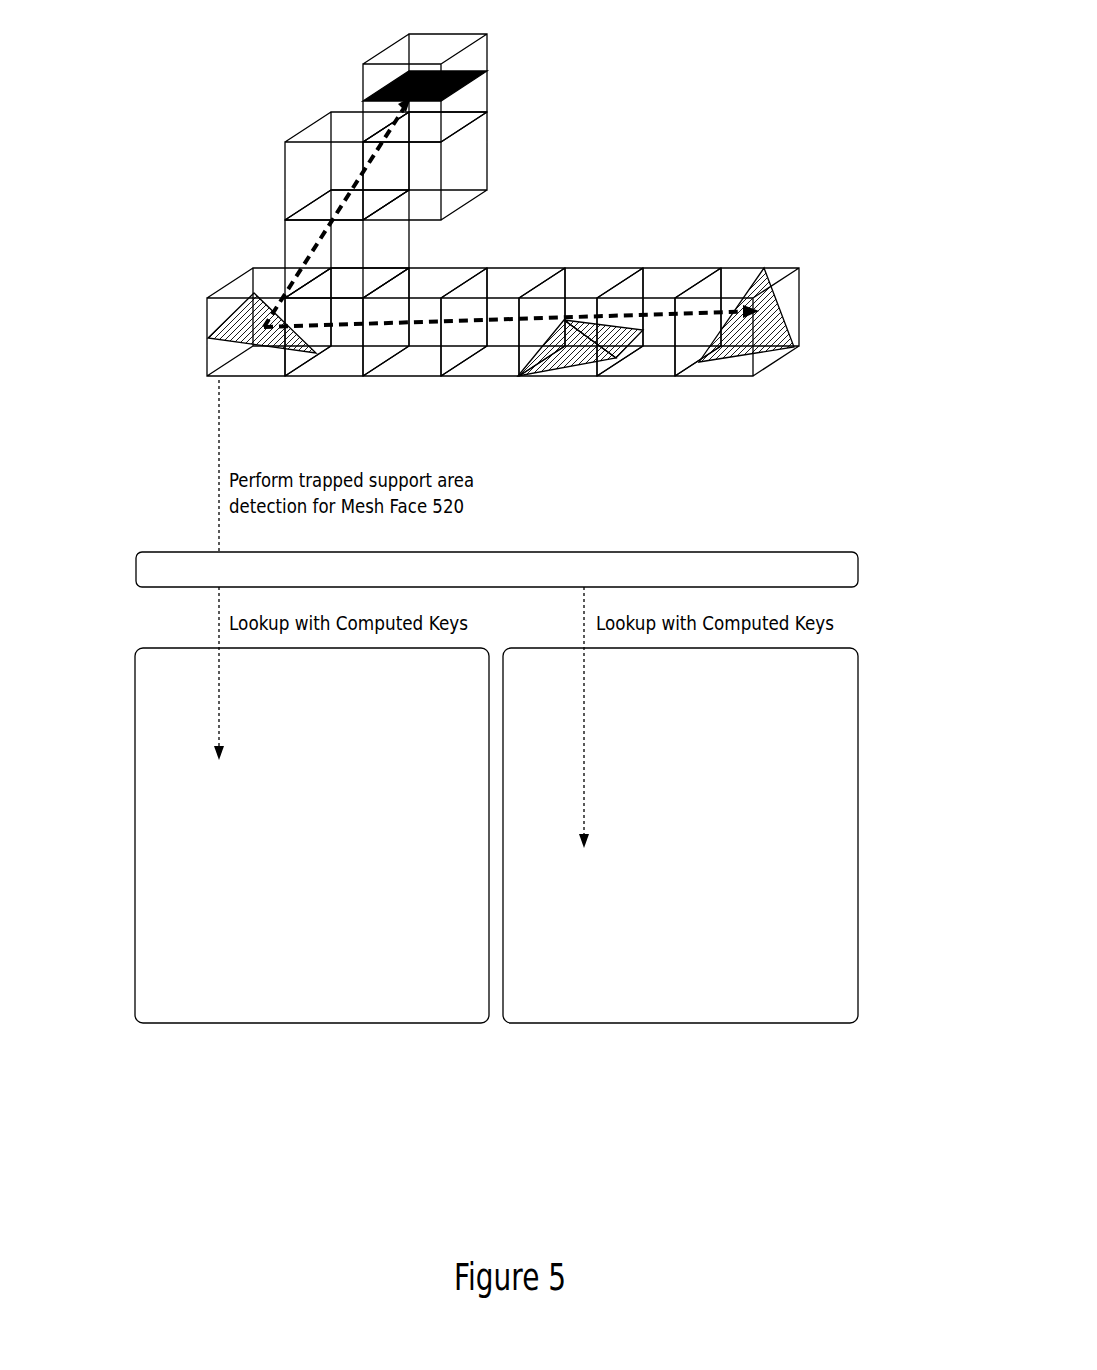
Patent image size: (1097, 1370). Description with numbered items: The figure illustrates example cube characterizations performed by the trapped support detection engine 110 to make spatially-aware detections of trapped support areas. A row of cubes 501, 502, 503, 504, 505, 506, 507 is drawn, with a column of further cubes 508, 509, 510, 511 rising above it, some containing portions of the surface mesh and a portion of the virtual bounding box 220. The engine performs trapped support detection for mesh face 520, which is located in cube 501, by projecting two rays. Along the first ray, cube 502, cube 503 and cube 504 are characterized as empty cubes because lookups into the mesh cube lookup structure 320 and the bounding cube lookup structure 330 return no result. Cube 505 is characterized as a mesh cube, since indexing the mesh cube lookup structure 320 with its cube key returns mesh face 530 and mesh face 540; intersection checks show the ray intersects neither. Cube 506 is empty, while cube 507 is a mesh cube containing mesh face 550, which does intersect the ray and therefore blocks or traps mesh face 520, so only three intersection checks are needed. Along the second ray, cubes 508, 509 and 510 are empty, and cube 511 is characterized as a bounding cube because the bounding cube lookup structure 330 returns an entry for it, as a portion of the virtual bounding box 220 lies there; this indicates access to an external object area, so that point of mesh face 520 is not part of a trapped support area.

The virtual bounding box 220 is at (486, 71).
The bounding cube 511 is at (486, 98).
The empty cube 510 is at (486, 171).
The empty cube 509 is at (283, 157).
The empty cube 508 is at (283, 232).
The cube 501 is at (255, 378).
The empty cube 502 is at (335, 378).
The empty cube 503 is at (407, 378).
The empty cube 504 is at (488, 378).
The mesh cube 505 is at (567, 378).
The empty cube 506 is at (645, 378).
The mesh cube 507 is at (722, 378).
The mesh face 520 is at (315, 353).
The mesh face 530 is at (573, 343).
The mesh face 540 is at (617, 337).
The mesh face 550 is at (733, 322).
The trapped support detection engine 110 is at (840, 578).
The mesh cube lookup structure 320 is at (452, 981).
The bounding cube lookup structure 330 is at (837, 981).